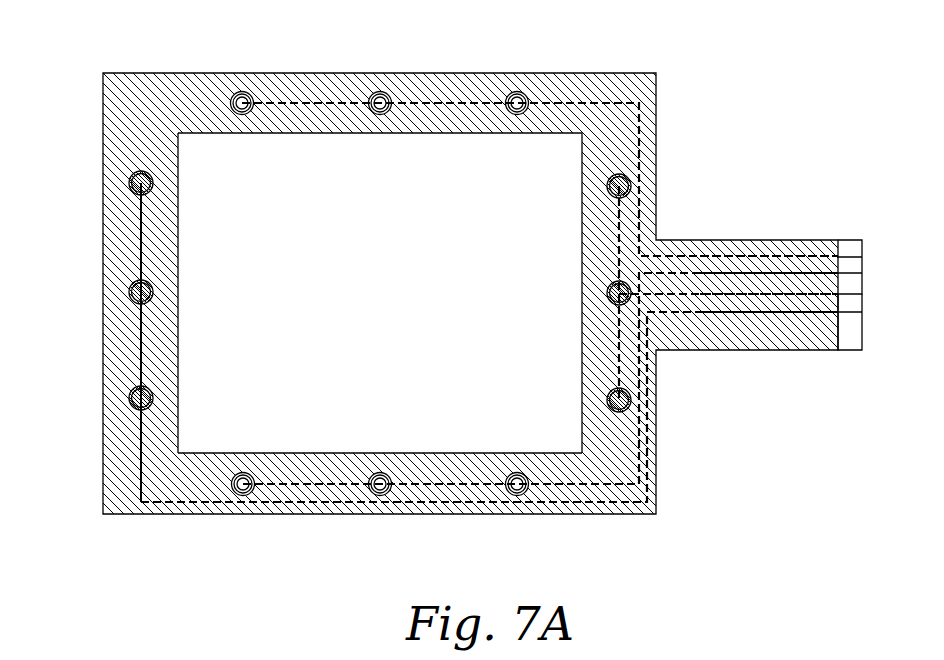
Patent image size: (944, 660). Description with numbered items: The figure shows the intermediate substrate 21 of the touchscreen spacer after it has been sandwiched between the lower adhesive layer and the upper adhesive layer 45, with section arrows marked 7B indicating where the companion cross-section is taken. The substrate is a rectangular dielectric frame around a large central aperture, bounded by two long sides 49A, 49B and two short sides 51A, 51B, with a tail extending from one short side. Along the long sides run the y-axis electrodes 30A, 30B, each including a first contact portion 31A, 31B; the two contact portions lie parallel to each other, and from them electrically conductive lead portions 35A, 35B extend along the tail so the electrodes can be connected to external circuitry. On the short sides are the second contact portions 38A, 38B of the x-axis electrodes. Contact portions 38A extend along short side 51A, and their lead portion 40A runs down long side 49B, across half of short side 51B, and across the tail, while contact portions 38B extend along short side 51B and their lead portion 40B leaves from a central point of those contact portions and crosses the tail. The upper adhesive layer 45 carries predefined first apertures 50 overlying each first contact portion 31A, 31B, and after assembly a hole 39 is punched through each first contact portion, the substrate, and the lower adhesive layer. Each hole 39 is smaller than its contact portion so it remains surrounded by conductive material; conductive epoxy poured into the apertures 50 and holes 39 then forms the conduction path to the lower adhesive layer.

The intermediate substrate 21 is at (657, 157).
The upper adhesive layer 45 is at (637, 93).
The y-axis electrode 30A is at (430, 133).
The y-axis electrode 30B is at (405, 470).
The long side 49A is at (404, 118).
The long side 49B is at (350, 463).
The short side 51A is at (160, 308).
The short side 51B is at (583, 285).
The lead portion 35A is at (838, 238).
The lead portion 35B is at (762, 268).
The lead portion 40A is at (818, 332).
The lead portion 40B is at (751, 318).
The hole 39 is at (235, 95).
The first contact portion 31A is at (243, 91).
The first contact portion 31B is at (245, 497).
The first aperture 50 is at (237, 493).
The second contact portion 38A is at (152, 187).
The second contact portion 38B is at (608, 186).
The section line 7B is at (92, 360).